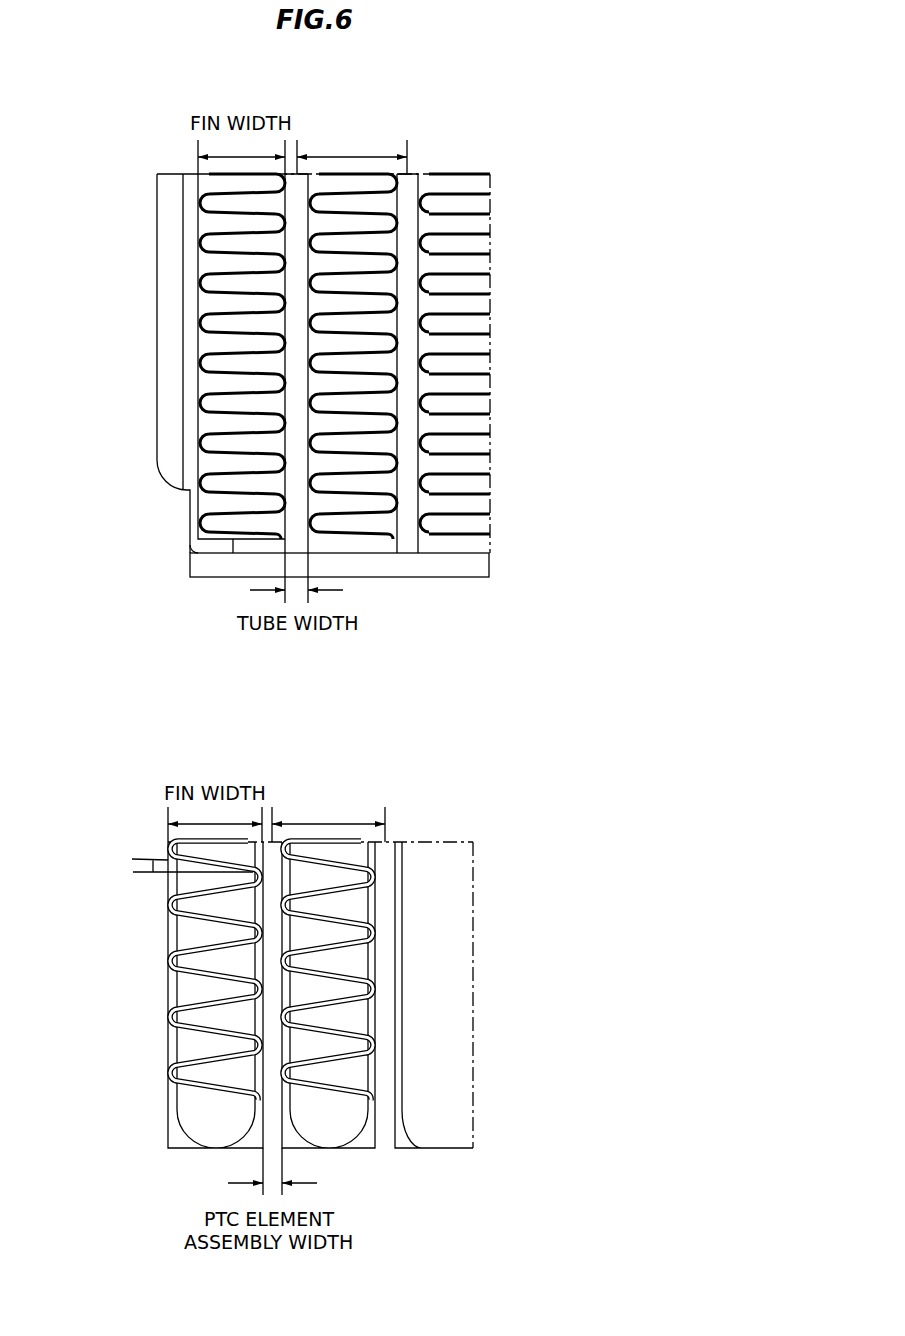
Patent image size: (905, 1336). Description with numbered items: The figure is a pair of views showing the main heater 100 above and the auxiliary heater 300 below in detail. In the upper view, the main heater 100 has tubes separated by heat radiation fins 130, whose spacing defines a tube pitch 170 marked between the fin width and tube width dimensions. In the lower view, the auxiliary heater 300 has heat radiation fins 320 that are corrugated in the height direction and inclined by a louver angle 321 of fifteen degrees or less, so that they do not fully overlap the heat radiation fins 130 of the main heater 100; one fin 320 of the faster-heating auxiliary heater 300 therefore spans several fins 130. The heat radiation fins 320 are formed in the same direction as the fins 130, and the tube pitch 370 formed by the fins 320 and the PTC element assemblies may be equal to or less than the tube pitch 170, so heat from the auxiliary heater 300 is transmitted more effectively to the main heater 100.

The main heater 100 is at (511, 235).
The heat radiation fin 130 is at (467, 373).
The tube pitch 170 is at (353, 155).
The auxiliary heater 300 is at (142, 813).
The heat radiation fin 320 is at (333, 975).
The louver angle 321 is at (132, 859).
The tube pitch 370 is at (330, 820).